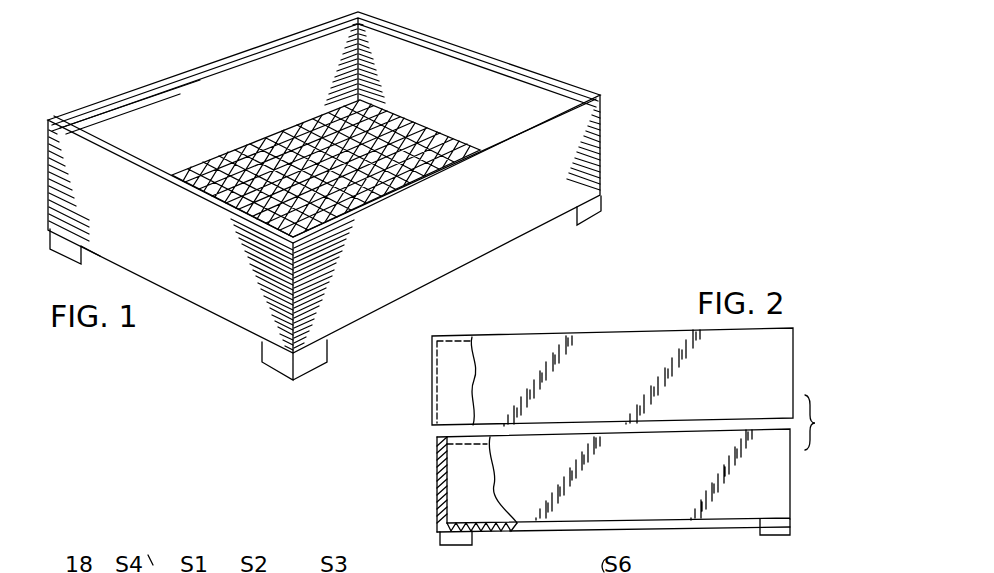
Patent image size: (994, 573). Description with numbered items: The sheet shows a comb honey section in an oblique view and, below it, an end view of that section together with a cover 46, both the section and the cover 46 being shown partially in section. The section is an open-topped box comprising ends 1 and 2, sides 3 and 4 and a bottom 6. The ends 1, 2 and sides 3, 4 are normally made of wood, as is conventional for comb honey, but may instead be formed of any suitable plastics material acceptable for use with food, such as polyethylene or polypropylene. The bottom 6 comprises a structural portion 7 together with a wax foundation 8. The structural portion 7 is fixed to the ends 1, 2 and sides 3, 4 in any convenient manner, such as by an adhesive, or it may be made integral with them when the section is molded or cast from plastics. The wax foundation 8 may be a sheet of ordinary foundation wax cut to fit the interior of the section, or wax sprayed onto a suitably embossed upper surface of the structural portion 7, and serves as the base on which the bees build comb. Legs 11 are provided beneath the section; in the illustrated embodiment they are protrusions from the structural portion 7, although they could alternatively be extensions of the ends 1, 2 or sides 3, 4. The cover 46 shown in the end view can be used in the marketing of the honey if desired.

In FIG. 1, the end 1 is at (435, 56).
In FIG. 1, the end 2 is at (98, 167).
In FIG. 2, the end 2 is at (613, 476).
In FIG. 1, the side 3 is at (220, 80).
In FIG. 2, the side 3 is at (437, 468).
In FIG. 1, the side 4 is at (556, 156).
In FIG. 1, the bottom 6 is at (318, 107).
In FIG. 2, the bottom 6 is at (560, 532).
In FIG. 2, the structural portion 7 is at (490, 530).
In FIG. 2, the wax foundation 8 is at (478, 522).
In FIG. 1, the legs 11 is at (305, 360).
In FIG. 2, the legs 11 is at (778, 530).
In FIG. 2, the cover 46 is at (432, 368).